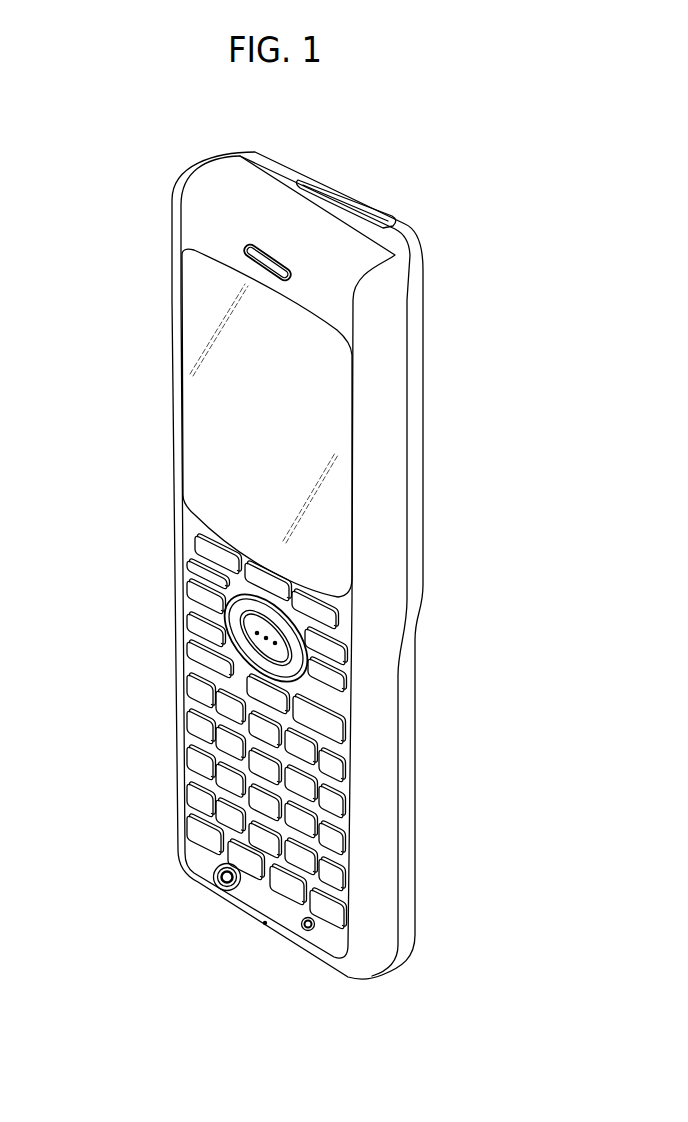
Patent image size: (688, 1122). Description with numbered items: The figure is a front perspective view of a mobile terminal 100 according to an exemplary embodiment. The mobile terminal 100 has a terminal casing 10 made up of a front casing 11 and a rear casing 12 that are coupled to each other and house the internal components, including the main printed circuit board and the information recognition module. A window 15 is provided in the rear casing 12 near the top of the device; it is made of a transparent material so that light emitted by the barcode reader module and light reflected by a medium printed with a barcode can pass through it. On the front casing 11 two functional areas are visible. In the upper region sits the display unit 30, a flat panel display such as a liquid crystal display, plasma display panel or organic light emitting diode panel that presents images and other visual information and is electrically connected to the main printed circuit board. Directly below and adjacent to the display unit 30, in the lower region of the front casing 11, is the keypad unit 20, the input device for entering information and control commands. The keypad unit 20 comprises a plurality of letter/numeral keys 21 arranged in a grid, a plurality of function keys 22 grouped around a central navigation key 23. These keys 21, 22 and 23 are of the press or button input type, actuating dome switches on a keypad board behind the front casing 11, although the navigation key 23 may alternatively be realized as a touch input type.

The mobile terminal 100 is at (87, 133).
The terminal casing 10 is at (478, 330).
The front casing 11 is at (418, 332).
The rear casing 12 is at (388, 371).
The window 15 is at (338, 196).
The keypad unit 20 is at (125, 598).
The letter/numeral keys 21 is at (167, 675).
The function keys 22 is at (167, 527).
The navigation key 23 is at (235, 640).
The display unit 30 is at (200, 388).